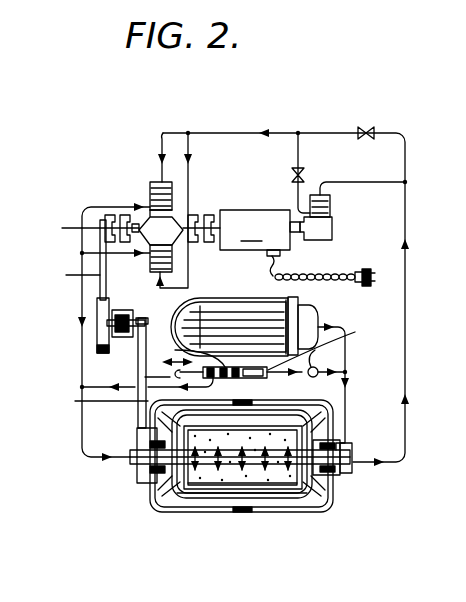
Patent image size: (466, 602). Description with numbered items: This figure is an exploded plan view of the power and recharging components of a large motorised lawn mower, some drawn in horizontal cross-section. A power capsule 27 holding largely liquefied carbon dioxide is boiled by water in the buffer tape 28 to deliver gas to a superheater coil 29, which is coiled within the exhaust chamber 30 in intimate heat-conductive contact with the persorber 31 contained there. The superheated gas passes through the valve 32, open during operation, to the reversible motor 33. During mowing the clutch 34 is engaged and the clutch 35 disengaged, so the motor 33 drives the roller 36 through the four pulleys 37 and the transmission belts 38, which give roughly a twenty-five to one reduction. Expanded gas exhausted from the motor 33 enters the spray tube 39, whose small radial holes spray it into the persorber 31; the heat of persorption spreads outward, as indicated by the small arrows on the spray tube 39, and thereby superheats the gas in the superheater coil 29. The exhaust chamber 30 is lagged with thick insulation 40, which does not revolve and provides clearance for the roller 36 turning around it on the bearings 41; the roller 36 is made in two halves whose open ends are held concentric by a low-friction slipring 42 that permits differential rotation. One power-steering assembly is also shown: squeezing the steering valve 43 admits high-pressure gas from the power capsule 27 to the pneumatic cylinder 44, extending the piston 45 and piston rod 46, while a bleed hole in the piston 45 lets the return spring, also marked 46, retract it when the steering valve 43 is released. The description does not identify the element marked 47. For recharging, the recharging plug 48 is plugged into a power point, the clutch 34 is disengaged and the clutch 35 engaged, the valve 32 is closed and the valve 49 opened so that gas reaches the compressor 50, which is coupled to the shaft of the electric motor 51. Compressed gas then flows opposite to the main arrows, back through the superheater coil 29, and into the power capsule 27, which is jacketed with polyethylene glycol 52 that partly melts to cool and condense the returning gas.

The power capsule 27 is at (310, 319).
The buffer tape 28 is at (222, 326).
The superheater coil 29 is at (273, 484).
The exhaust chamber 30 is at (265, 490).
The persorber 31 is at (191, 488).
The valve 32 is at (366, 127).
The motor 33 is at (160, 226).
The clutch 34 is at (126, 215).
The clutch 35 is at (209, 215).
The roller 36 is at (150, 511).
The pulleys 37 is at (232, 550).
The transmission belts 38 is at (92, 339).
The spray tube 39 is at (273, 458).
The insulation 40 is at (176, 500).
The bearings 41 is at (150, 440).
The slipring 42 is at (243, 511).
The steering valve 43 is at (318, 376).
The pneumatic cylinder 44 is at (327, 340).
The piston 45 is at (262, 378).
The piston rod 46 is at (145, 378).
The reciprocating motion 47 is at (171, 349).
The recharging plug 48 is at (366, 269).
The valve 49 is at (292, 178).
The compressor 50 is at (333, 228).
The electric motor 51 is at (255, 230).
The polyethylene glycol 52 is at (183, 303).